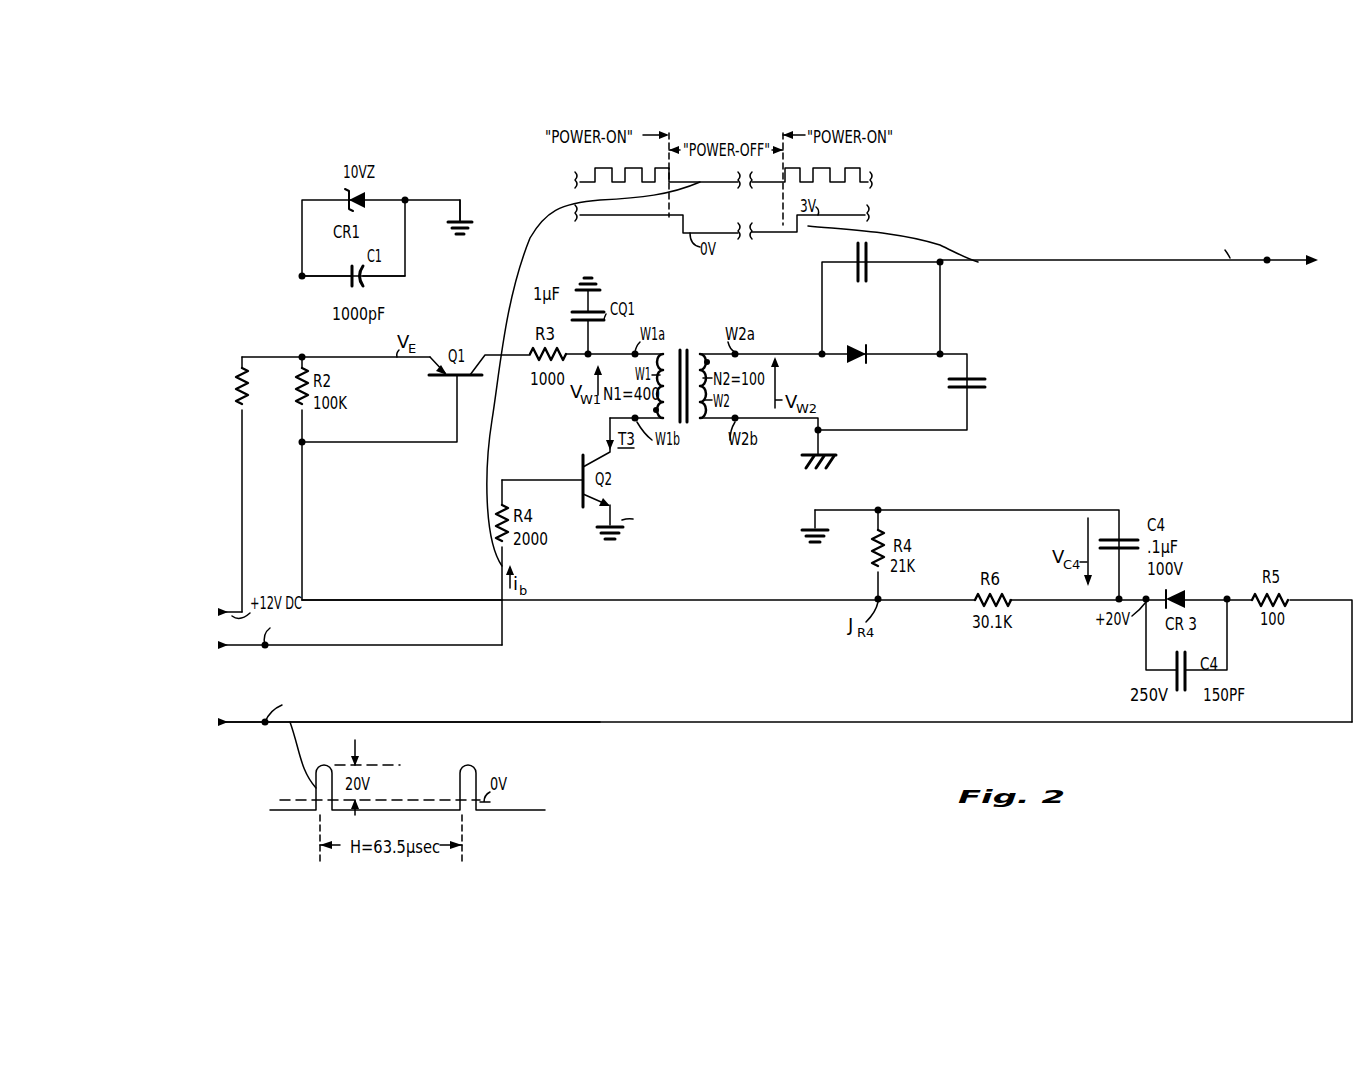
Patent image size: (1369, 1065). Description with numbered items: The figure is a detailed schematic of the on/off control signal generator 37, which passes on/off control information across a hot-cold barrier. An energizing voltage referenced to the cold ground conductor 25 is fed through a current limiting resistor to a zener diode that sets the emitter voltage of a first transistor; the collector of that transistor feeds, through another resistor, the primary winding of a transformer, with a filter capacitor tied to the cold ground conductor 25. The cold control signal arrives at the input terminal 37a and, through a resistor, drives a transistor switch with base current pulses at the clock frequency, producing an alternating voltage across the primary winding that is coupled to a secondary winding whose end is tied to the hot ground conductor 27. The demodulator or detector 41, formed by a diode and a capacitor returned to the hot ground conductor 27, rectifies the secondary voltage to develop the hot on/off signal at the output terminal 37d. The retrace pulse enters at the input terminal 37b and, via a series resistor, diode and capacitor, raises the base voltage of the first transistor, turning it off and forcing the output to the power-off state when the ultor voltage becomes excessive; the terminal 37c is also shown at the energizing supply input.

The cold ground conductor 25 is at (460, 218).
The hot ground conductor 27 is at (828, 455).
The on/off control signal generator 37 is at (772, 757).
The input terminal 37a is at (265, 648).
The input terminal 37b is at (265, 725).
The excitation voltage input terminal 37c is at (242, 472).
The output terminal 37d is at (1275, 247).
The demodulator or detector 41 is at (926, 410).